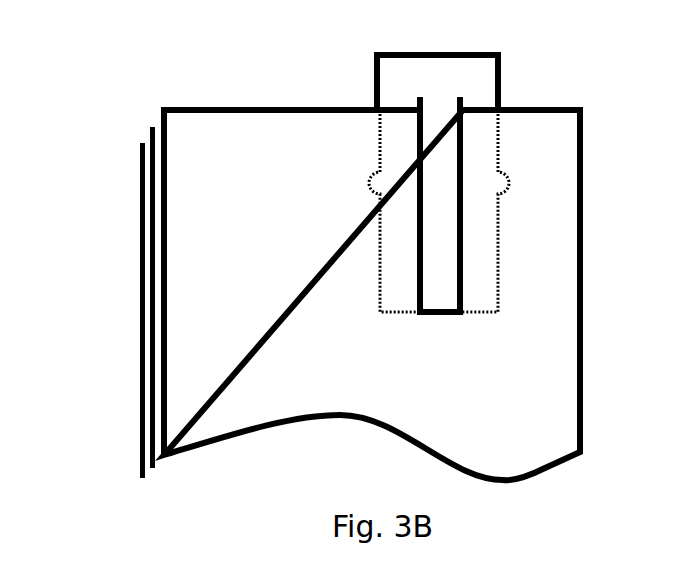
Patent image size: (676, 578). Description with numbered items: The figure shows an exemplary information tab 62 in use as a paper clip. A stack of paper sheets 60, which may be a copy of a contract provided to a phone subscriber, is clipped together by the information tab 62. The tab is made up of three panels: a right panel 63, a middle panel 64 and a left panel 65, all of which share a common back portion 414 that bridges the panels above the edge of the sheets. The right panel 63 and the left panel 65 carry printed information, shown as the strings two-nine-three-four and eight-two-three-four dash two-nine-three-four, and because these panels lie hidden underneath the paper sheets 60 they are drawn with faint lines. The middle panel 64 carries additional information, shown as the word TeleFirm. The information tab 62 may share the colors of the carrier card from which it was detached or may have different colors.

The paper sheets 60 is at (140, 188).
The information tab 62 is at (377, 73).
The back portion 414 is at (438, 78).
The left panel 65 is at (395, 298).
The middle panel 64 is at (440, 300).
The right panel 63 is at (480, 300).